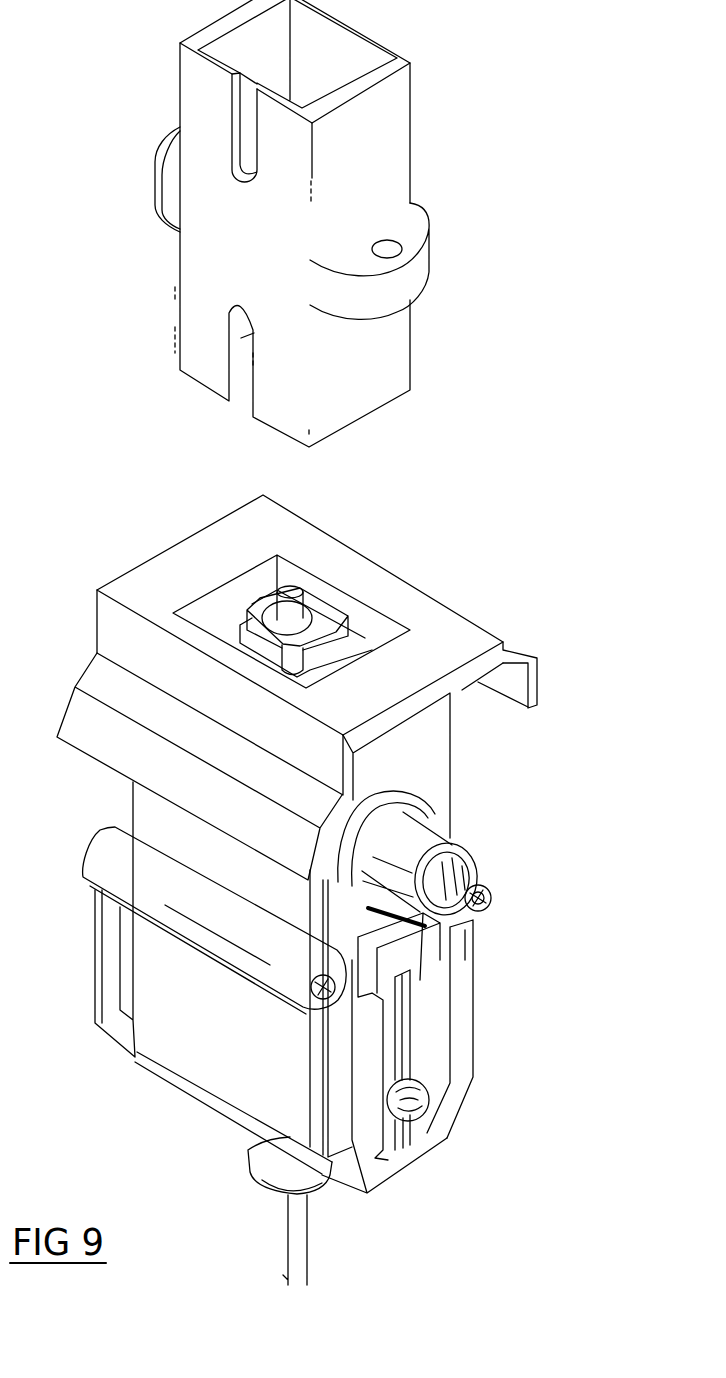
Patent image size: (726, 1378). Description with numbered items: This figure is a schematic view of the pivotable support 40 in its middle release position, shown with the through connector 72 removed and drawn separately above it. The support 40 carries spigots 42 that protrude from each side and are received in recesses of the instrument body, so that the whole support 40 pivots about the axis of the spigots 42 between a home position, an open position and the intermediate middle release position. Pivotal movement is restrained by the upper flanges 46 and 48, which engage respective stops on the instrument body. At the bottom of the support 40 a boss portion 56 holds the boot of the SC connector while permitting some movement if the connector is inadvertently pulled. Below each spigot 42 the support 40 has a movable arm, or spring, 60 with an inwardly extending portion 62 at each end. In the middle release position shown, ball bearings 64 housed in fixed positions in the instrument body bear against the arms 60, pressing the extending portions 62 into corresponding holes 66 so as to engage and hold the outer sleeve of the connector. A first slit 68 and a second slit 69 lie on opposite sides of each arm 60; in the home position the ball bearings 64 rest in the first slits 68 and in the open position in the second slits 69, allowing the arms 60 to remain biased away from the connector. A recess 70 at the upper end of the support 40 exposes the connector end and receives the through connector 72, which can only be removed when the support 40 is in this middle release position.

The pivotable support 40 is at (433, 743).
The spigot 42 is at (473, 857).
The upper flange 46 is at (102, 722).
The upper flange 48 is at (527, 653).
The boss portion 56 is at (300, 1190).
The movable arm 60 is at (422, 1020).
The inwardly extending portion 62 is at (366, 910).
The ball bearing 64 is at (429, 1098).
The hole 66 is at (492, 935).
The first slit 68 is at (370, 1103).
The second slit 69 is at (435, 1055).
The recess 70 is at (212, 607).
The through connector 72 is at (200, 95).